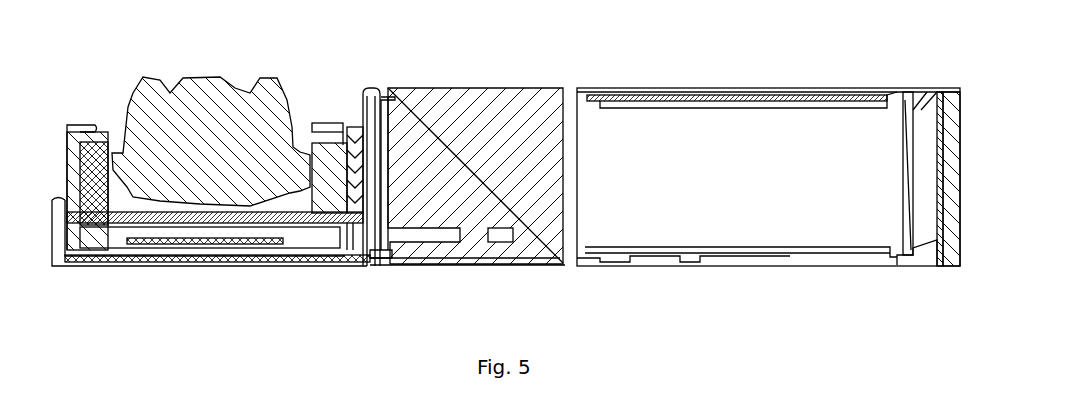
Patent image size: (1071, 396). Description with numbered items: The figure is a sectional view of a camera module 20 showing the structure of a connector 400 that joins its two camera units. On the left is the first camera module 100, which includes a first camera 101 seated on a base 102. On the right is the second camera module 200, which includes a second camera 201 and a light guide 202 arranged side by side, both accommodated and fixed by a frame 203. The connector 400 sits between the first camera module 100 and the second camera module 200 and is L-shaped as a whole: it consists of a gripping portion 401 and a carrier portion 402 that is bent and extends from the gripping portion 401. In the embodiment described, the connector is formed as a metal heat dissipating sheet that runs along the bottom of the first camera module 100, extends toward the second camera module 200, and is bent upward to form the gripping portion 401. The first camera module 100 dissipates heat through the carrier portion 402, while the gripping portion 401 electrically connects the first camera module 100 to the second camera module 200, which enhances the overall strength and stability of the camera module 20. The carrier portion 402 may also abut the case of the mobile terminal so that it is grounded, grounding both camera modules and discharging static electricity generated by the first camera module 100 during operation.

The first camera module 100 is at (101, 92).
The first camera 101 is at (203, 92).
The base 102 is at (52, 200).
The camera module 20 is at (315, 80).
The gripping portion 401 is at (352, 140).
The connector 400 is at (357, 80).
The frame 203 is at (371, 93).
The light guide 202 is at (441, 97).
The second camera 201 is at (690, 140).
The second camera module 200 is at (859, 81).
The carrier portion 402 is at (226, 212).